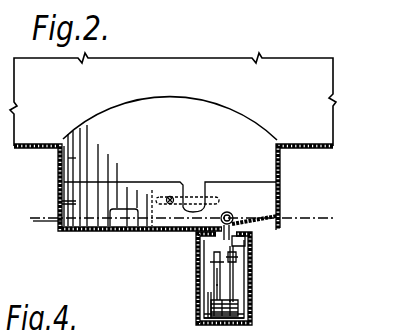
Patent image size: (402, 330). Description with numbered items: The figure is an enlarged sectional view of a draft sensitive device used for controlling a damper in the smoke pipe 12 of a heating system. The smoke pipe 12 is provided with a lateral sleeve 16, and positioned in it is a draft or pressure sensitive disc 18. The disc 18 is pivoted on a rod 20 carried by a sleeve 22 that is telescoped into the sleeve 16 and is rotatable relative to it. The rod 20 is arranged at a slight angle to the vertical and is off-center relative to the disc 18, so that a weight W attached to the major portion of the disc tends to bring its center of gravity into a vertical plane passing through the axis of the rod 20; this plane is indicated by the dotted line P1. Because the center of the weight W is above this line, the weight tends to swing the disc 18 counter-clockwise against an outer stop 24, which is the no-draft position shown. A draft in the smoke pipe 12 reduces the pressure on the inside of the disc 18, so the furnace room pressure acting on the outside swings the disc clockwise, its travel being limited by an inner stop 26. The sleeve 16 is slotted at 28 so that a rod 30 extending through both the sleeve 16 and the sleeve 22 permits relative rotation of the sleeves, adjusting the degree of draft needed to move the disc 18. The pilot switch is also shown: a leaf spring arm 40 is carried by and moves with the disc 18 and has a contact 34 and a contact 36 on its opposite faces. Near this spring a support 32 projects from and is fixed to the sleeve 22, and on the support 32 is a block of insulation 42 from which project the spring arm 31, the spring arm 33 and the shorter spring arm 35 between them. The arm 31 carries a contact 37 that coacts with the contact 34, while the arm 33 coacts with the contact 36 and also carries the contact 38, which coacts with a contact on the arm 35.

The smoke pipe 12 is at (173, 99).
The lateral sleeve 16 is at (70, 157).
The draft or pressure sensitive disc 18 is at (152, 230).
The rod 20 is at (232, 213).
The sleeve 22 is at (262, 190).
The outer stop 24 is at (65, 232).
The inner stop 26 is at (62, 198).
The slot 28 is at (194, 200).
The rod 30 is at (169, 197).
The spring arm 31 is at (252, 292).
The support 32 is at (204, 316).
The spring arm 33 is at (212, 266).
The contact 34 is at (234, 272).
The shorter spring arm 35 is at (206, 296).
The contact 36 is at (214, 260).
The contact 37 is at (237, 258).
The contact 38 is at (216, 290).
The leaf spring arm 40 is at (251, 238).
The block of insulation 42 is at (239, 308).
The dotted line P1 is at (47, 223).
The weight W is at (117, 218).